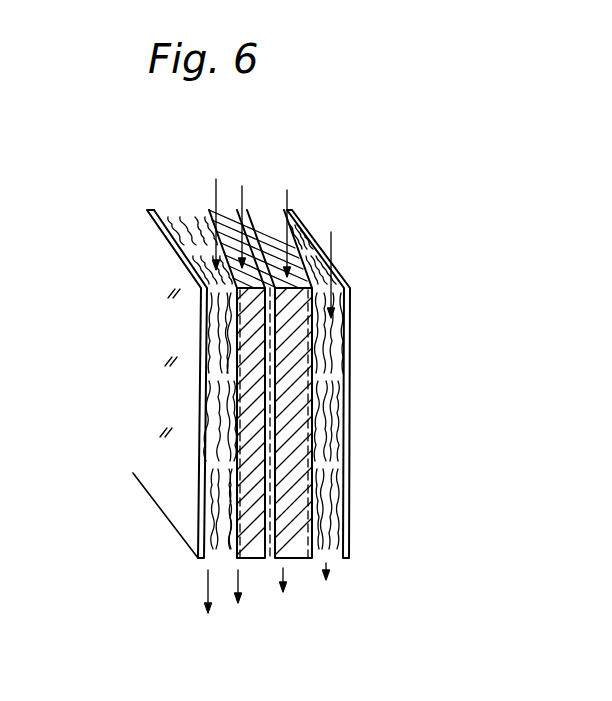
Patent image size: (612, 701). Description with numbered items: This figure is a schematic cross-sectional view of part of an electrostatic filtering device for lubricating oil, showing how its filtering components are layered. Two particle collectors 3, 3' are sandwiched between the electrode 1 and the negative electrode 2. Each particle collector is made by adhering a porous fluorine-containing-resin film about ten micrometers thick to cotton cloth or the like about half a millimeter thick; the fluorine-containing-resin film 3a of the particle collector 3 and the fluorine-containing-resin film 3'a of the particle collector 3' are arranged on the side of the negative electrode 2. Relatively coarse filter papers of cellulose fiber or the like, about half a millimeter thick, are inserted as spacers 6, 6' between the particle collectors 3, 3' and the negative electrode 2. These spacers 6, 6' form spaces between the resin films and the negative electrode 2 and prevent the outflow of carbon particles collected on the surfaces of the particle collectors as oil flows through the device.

The electrode 1 is at (270, 558).
The negative electrode 2 is at (182, 541).
The particle collector 3 is at (289, 435).
The fluorine-containing-resin film 3a is at (305, 558).
The particle collector 3' is at (237, 435).
The fluorine-containing-resin film 3'a is at (217, 476).
The spacer 6 is at (262, 383).
The spacer 6' is at (264, 421).